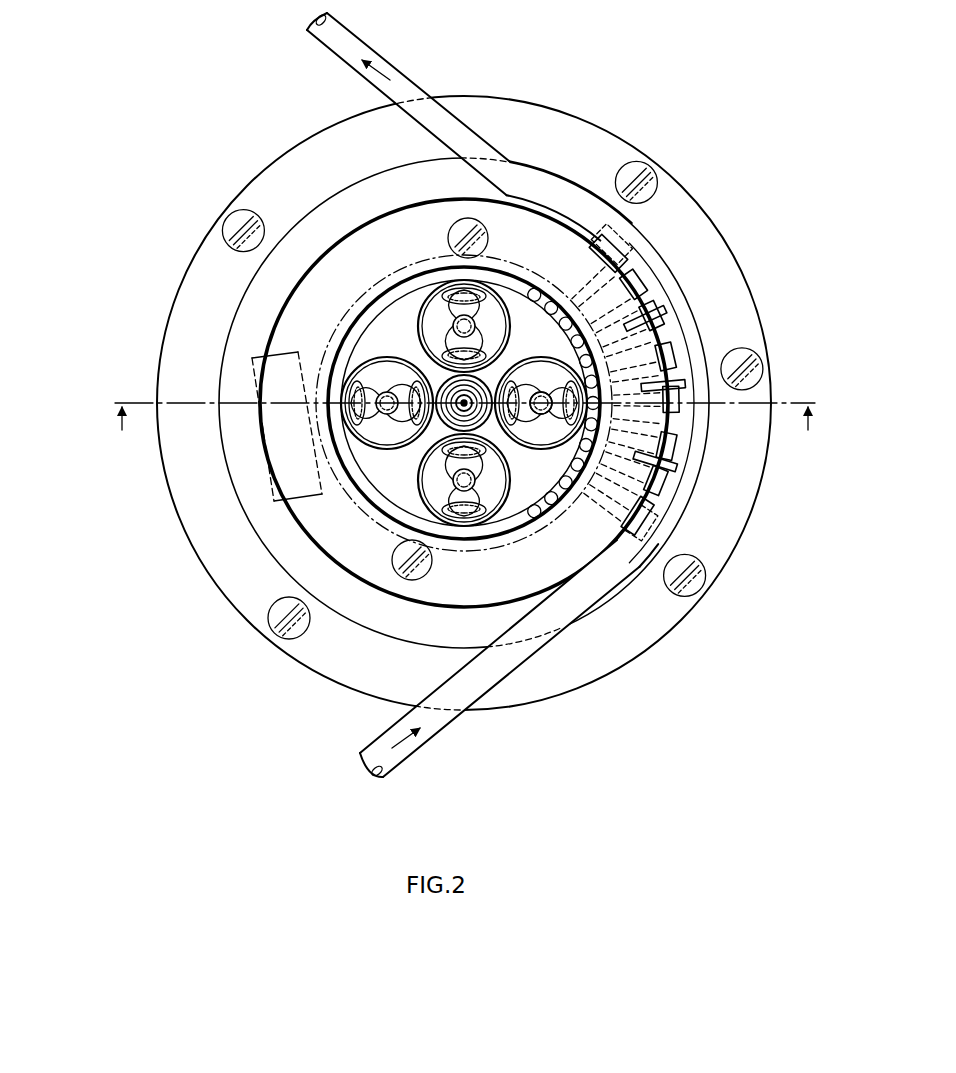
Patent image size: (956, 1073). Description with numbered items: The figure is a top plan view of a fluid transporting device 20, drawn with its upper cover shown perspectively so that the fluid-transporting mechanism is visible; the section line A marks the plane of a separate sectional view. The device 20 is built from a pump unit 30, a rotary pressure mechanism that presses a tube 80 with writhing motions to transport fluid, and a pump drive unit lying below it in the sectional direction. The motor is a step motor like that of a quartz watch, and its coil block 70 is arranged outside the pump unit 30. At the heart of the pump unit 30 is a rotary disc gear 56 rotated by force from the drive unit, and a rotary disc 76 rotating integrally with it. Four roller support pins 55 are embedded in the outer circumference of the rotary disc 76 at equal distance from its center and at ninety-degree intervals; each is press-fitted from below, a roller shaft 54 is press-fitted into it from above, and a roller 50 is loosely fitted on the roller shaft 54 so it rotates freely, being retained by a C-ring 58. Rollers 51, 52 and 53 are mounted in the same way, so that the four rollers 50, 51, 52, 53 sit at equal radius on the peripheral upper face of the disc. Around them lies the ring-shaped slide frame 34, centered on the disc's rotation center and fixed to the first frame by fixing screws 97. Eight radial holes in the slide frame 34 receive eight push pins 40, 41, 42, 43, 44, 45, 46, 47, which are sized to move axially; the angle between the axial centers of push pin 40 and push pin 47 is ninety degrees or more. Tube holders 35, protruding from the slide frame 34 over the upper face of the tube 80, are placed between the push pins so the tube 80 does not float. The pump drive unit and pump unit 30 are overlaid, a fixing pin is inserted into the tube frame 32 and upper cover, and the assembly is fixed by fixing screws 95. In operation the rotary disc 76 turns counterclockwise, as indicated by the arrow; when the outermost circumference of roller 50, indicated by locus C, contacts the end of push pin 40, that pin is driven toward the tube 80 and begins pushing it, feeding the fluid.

The fluid transporting device 20 is at (702, 66).
The pump unit 30 is at (395, 333).
The tube frame 32 is at (530, 97).
The slide frame 34 is at (355, 258).
The tube holder 35 is at (655, 276).
The push pin 40 is at (660, 526).
The push pin 41 is at (678, 486).
The push pin 42 is at (690, 455).
The push pin 43 is at (702, 408).
The push pin 44 is at (690, 352).
The push pin 45 is at (662, 304).
The push pin 46 is at (652, 280).
The push pin 47 is at (622, 244).
The roller 50 is at (530, 493).
The roller 51 is at (432, 290).
The roller 52 is at (370, 356).
The roller 53 is at (493, 520).
The roller shaft 54 is at (538, 392).
The roller support pin 55 is at (578, 442).
The rotary disc gear 56 is at (456, 432).
The C-ring 58 is at (576, 476).
The coil block 70 is at (312, 500).
The rotary disc 76 is at (397, 490).
The tube 80 is at (403, 72).
The fixing screw 95 is at (648, 166).
The fixing screw 97 is at (490, 238).
The A-A section A is at (465, 430).
The locus C is at (398, 288).